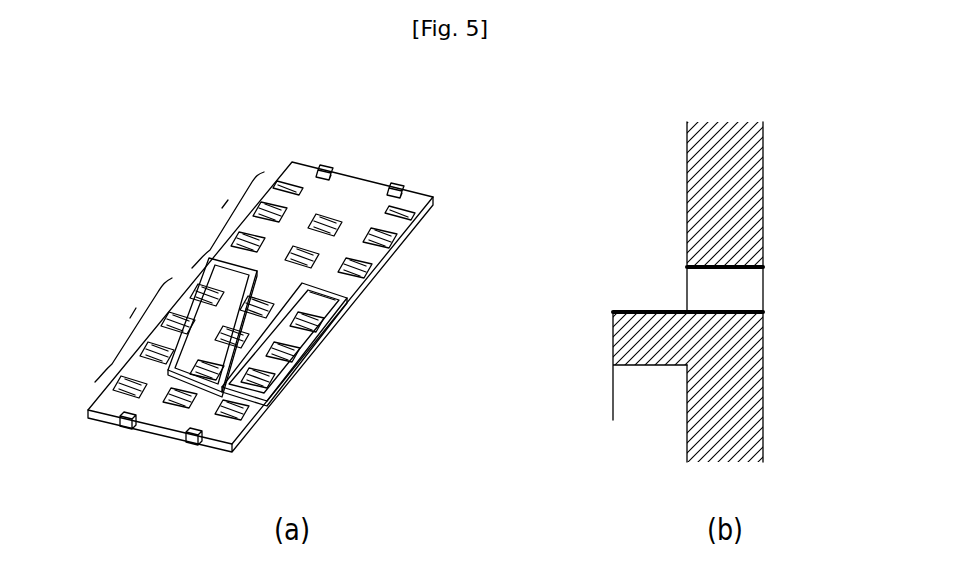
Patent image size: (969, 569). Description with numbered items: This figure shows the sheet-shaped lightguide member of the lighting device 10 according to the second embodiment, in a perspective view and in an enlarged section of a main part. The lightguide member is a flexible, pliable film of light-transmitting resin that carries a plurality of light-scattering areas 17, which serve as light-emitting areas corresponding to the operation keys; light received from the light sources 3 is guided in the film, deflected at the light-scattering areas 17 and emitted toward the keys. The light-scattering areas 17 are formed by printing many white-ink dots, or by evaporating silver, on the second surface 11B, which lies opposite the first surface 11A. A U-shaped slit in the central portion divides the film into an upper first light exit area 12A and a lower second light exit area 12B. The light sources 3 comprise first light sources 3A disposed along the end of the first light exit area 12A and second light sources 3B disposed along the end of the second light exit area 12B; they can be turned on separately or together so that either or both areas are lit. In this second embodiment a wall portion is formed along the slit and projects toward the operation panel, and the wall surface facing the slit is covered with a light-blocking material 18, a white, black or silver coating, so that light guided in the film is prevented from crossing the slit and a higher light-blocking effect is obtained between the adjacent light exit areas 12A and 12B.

The light sources 3 is at (237, 313).
The first light sources 3A is at (324, 168).
The second light sources 3B is at (118, 430).
The lighting device 10 is at (277, 271).
The first surface 11A is at (686, 157).
The second surface 11B is at (765, 430).
The first light exit area 12A is at (222, 208).
The second light exit area 12B is at (134, 316).
The light-scattering areas 17 is at (408, 210).
The light-blocking material 18 is at (646, 310).